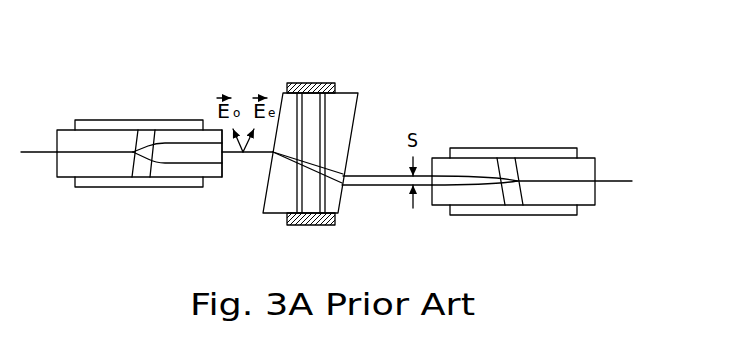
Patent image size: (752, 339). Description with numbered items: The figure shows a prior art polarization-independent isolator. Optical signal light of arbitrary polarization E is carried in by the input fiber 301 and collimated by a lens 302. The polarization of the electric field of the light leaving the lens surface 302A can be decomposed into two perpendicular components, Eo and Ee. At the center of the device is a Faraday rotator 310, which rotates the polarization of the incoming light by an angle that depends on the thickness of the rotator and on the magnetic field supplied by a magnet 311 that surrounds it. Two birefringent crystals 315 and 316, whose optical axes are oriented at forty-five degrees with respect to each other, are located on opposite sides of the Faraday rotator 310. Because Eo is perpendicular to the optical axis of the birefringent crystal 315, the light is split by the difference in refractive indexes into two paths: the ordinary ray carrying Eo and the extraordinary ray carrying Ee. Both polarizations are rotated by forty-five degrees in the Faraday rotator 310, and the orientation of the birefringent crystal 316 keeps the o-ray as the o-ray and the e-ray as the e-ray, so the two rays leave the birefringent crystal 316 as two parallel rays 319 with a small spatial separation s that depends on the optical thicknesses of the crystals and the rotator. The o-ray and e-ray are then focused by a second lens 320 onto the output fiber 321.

The input fiber 301 is at (68, 167).
The lens 302 is at (171, 170).
The lens surface 302A is at (216, 184).
The Faraday rotator 310 is at (316, 97).
The magnet 311 is at (298, 81).
The birefringent crystal 315 is at (282, 203).
The birefringent crystal 316 is at (351, 107).
The parallel rays 319 is at (370, 178).
The second lens 320 is at (468, 171).
The output fiber 321 is at (618, 173).